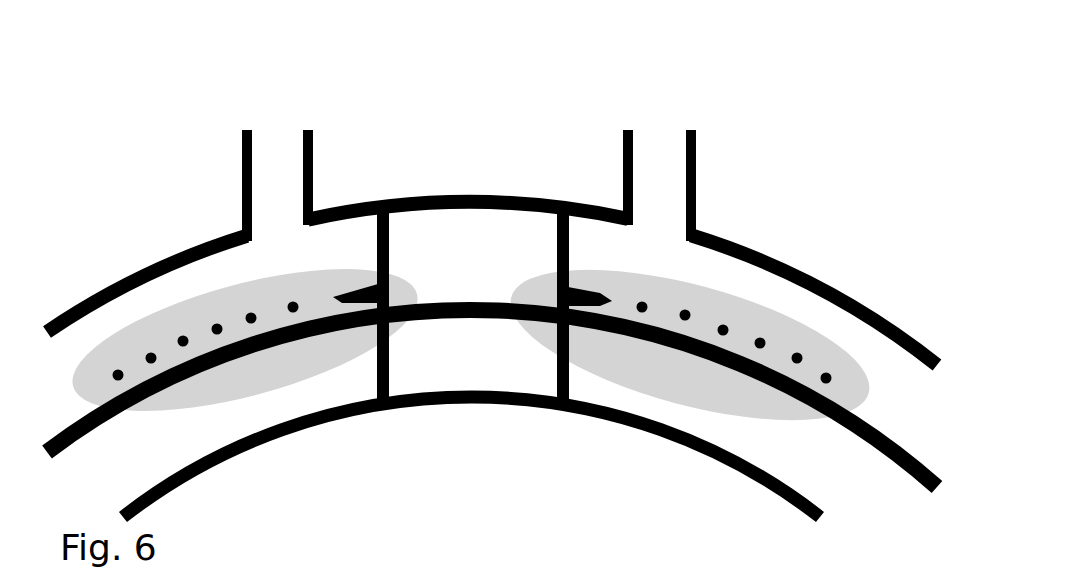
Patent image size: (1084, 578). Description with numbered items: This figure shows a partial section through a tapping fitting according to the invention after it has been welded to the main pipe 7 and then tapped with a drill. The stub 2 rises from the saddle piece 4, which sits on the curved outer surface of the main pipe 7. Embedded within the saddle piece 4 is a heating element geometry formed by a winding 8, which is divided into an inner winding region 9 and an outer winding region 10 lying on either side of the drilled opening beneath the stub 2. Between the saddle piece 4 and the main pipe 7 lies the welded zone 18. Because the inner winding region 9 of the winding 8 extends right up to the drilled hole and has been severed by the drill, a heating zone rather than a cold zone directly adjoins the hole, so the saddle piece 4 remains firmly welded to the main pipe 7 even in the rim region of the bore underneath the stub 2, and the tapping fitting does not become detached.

The stub 2 is at (272, 162).
The saddle piece 4 is at (272, 257).
The main pipe 7 is at (135, 447).
The winding 8 is at (504, 324).
The inner winding region 9 is at (592, 276).
The outer winding region 10 is at (751, 300).
The welded zone 18 is at (633, 337).